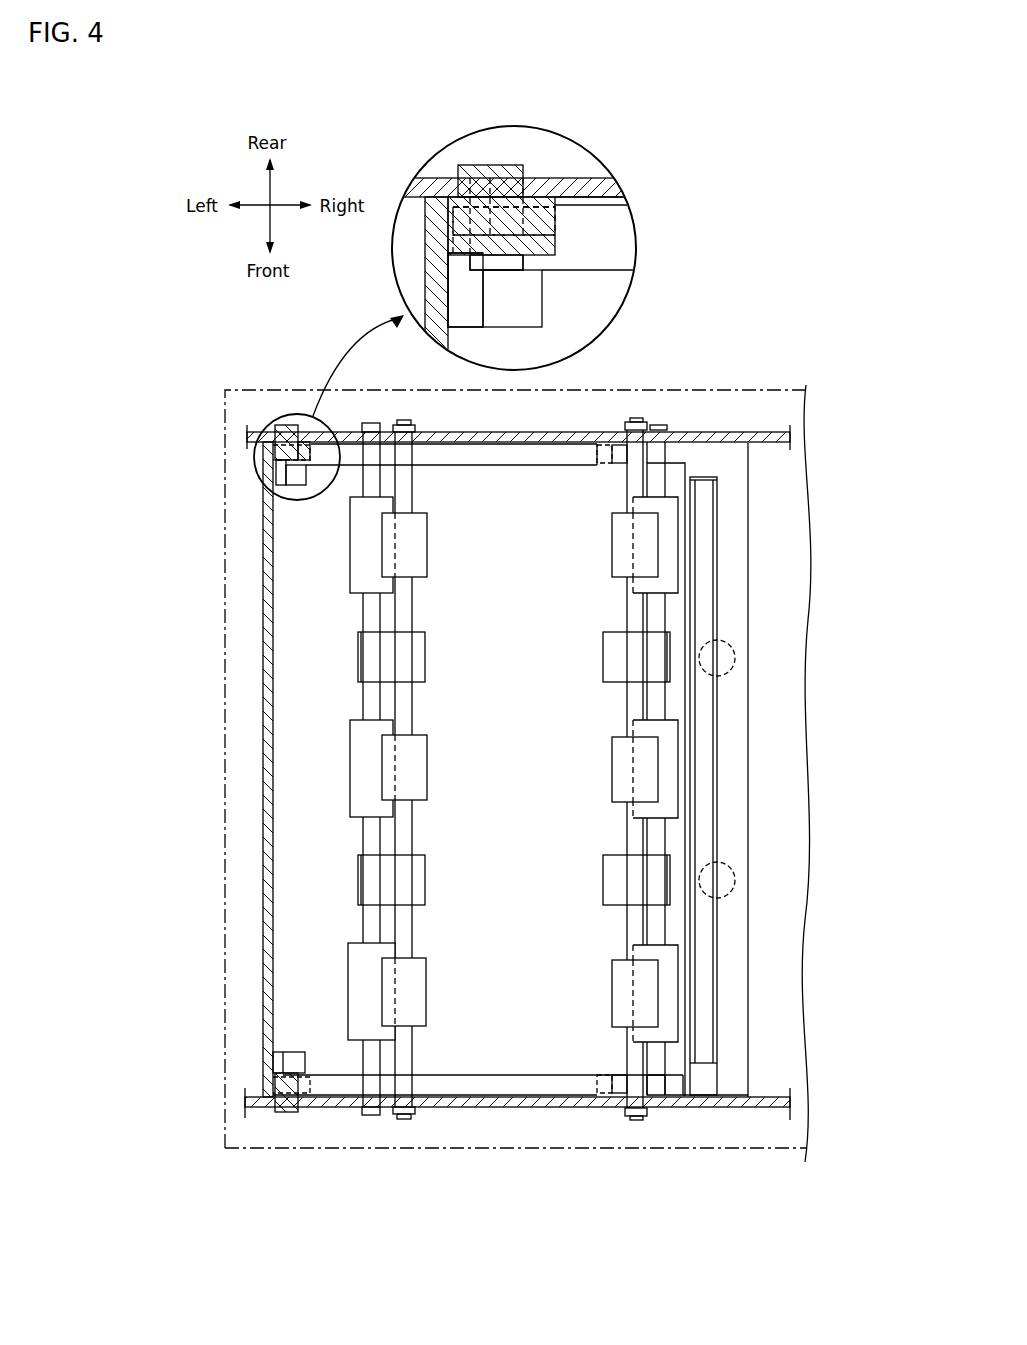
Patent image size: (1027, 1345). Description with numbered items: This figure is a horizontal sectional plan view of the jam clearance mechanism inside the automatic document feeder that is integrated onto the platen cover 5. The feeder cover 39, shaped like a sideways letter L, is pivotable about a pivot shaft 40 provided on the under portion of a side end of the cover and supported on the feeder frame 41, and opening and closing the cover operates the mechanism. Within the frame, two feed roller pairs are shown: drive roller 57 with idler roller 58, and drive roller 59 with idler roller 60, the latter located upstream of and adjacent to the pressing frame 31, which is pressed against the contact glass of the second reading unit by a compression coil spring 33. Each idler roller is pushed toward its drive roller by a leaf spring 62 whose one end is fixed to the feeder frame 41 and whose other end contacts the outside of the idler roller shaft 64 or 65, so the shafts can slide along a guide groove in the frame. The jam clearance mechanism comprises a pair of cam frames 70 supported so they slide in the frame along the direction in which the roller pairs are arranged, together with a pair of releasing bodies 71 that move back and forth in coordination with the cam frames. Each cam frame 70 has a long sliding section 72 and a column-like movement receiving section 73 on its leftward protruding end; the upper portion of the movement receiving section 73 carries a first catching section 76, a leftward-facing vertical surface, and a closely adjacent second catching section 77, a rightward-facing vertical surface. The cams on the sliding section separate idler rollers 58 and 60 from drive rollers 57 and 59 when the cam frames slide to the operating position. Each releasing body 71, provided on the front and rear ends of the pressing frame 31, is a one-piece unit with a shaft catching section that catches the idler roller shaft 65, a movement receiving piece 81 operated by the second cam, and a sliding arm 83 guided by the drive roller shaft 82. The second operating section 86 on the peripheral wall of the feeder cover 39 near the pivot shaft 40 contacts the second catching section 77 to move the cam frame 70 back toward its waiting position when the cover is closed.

The platen cover 5 is at (752, 390).
The pressing frame 31 is at (748, 613).
The compression coil spring 33 is at (736, 660).
The feeder cover 39 is at (262, 722).
The pivot shaft 40 is at (289, 425).
The feeder frame 41 is at (731, 432).
The drive roller 57 is at (418, 540).
The idler roller 58 is at (356, 567).
The drive roller 59 is at (624, 548).
The idler roller 60 is at (673, 550).
The spring 62 is at (423, 653).
The idler roller shaft 64 is at (371, 699).
The idler roller shaft 65 is at (668, 695).
The cam frame 70 is at (460, 470).
The releasing body 71 is at (674, 452).
The sliding section 72 is at (503, 459).
The movement receiving section 73 is at (294, 487).
The first catching section 76 is at (483, 308).
The second catching section 77 is at (472, 260).
The movement receiving piece 81 is at (597, 451).
The drive roller shaft 82 is at (637, 698).
The sliding arm 83 is at (620, 461).
The second operating section 86 is at (550, 234).